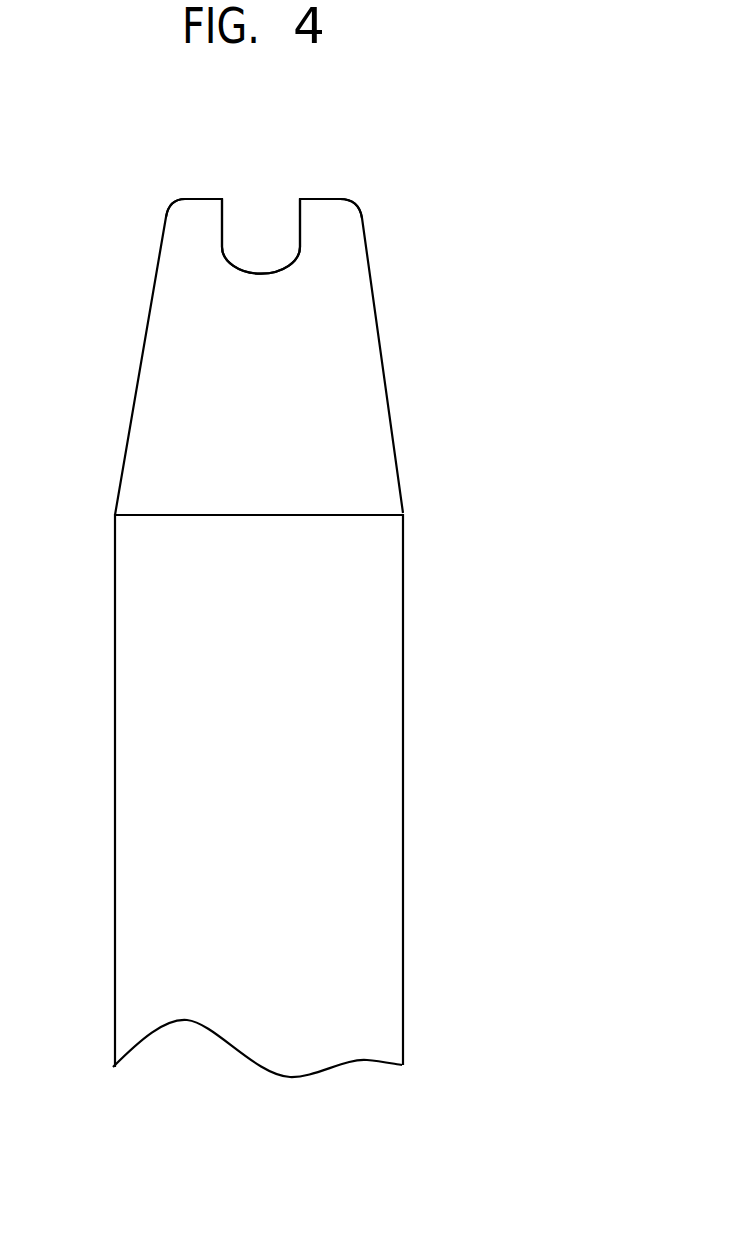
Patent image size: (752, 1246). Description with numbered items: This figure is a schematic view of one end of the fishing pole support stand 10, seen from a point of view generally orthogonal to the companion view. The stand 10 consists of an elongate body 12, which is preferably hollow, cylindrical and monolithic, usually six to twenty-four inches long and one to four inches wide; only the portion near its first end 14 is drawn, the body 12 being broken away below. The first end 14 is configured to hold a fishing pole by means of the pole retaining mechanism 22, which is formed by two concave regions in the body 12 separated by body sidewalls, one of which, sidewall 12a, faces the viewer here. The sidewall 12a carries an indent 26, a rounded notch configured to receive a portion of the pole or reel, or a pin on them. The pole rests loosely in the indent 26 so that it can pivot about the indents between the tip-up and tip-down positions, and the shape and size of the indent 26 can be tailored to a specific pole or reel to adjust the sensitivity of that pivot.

The support stand 10 is at (342, 597).
The elongate body 12 is at (405, 663).
The body sidewall 12a is at (182, 417).
The first end 14 is at (168, 210).
The pole retaining mechanism 22 is at (352, 197).
The indent 26 is at (225, 250).